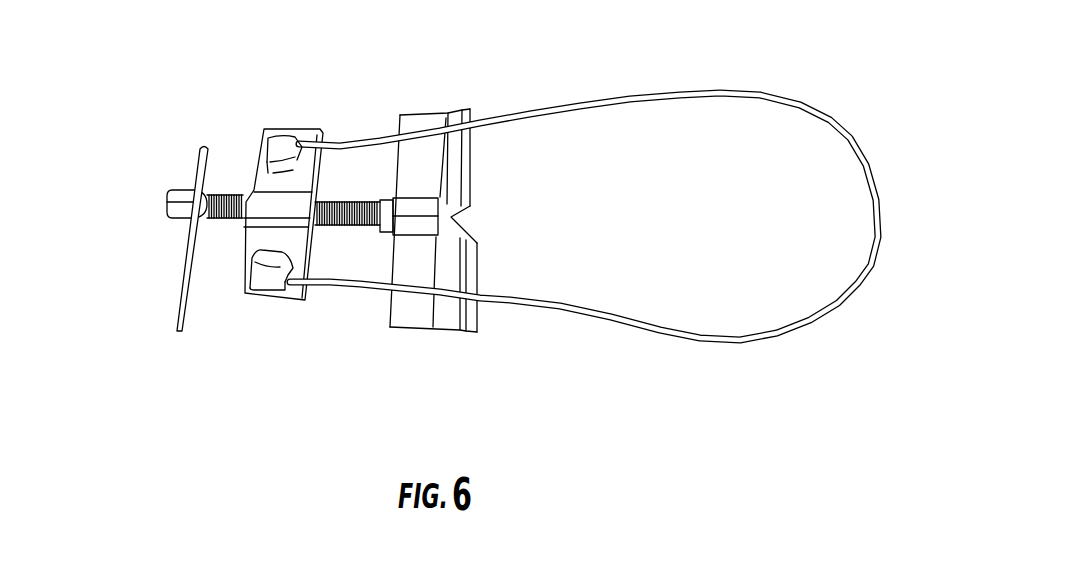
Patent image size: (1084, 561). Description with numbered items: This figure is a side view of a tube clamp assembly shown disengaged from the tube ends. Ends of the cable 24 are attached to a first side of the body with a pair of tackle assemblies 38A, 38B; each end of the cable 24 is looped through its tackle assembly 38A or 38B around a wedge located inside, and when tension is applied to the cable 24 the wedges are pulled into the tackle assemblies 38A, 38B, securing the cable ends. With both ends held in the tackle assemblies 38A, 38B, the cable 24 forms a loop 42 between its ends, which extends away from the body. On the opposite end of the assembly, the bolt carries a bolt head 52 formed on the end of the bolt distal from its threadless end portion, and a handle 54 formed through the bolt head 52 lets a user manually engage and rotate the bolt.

The cable 24 is at (522, 104).
The loop 42 is at (836, 142).
The tackle assembly 38A is at (264, 286).
The tackle assembly 38B is at (283, 143).
The bolt head 52 is at (165, 212).
The handle 54 is at (178, 318).